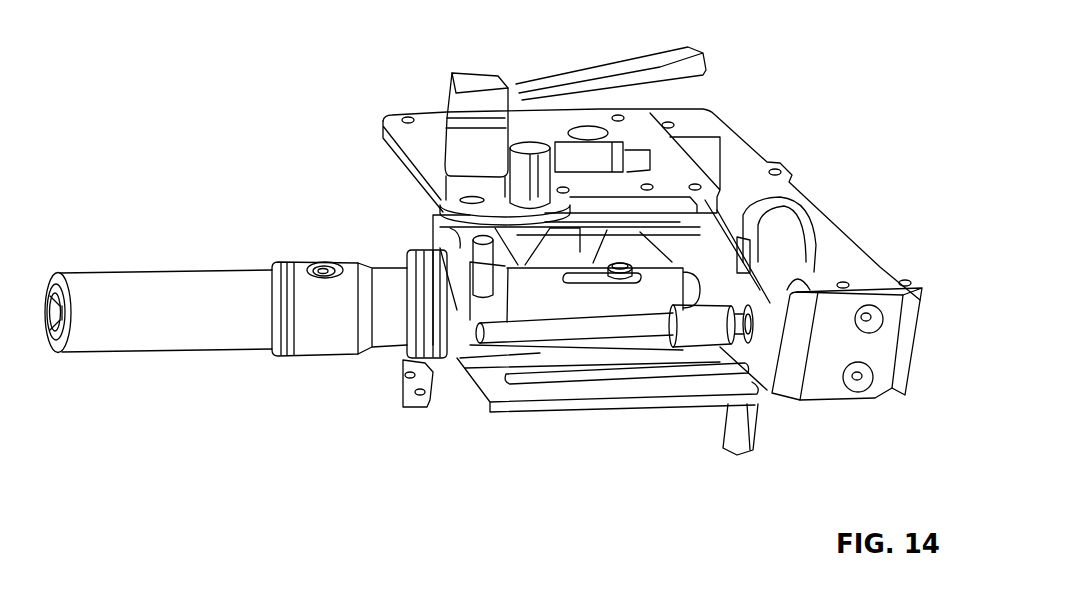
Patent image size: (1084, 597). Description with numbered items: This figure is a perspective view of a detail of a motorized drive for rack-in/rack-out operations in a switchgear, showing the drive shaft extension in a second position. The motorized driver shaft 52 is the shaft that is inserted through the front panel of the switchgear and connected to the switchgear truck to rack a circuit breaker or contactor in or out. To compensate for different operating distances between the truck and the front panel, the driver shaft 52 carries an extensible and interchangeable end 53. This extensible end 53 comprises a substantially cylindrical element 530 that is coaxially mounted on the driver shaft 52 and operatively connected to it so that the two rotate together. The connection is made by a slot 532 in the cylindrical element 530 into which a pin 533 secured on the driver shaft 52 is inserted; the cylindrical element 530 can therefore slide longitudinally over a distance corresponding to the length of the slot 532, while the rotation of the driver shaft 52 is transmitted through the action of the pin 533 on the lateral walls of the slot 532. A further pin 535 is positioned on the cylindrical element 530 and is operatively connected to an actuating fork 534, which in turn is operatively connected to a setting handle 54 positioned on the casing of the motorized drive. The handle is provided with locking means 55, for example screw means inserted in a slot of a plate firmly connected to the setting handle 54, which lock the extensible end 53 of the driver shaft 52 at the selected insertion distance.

The motorized driver shaft 52 is at (667, 297).
The extensible end 53 is at (241, 222).
The setting handle 54 is at (604, 73).
The locking means 55 is at (540, 143).
The cylindrical element 530 is at (535, 307).
The slot 532 is at (607, 284).
The pin 533 is at (623, 263).
The actuating fork 534 is at (433, 227).
The pin 535 is at (487, 240).